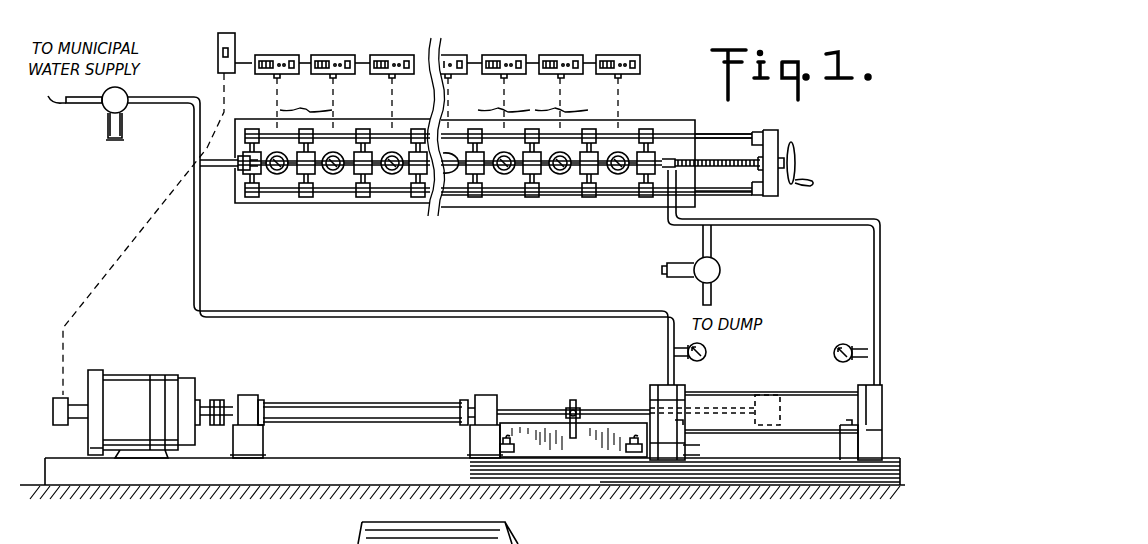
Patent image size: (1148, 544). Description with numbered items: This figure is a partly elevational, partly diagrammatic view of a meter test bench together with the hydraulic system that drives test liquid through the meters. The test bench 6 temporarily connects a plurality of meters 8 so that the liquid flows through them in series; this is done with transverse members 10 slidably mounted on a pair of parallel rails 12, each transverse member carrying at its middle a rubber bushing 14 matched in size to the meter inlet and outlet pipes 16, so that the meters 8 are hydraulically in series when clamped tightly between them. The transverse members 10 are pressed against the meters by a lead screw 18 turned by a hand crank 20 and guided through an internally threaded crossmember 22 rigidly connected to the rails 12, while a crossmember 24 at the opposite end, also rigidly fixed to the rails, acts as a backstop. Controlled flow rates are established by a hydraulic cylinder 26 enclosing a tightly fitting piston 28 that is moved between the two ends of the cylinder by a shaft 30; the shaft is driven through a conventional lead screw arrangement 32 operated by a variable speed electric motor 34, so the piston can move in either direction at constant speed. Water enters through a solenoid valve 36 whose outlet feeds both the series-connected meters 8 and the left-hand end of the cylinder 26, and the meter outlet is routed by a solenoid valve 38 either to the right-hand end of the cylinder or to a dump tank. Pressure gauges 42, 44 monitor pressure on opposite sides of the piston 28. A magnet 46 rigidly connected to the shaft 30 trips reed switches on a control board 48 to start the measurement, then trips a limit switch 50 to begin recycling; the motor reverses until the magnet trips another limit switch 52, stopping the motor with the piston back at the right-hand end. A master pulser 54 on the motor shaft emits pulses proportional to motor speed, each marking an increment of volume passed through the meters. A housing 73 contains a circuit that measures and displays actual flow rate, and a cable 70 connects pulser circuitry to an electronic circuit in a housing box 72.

The test bench 6 is at (680, 120).
The meters 8 is at (612, 178).
The transverse members 10 is at (483, 134).
The rails 12 is at (720, 176).
The rubber bushing 14 is at (648, 197).
The meter inlet and outlet pipes 16 is at (592, 178).
The lead screw 18 is at (710, 157).
The hand crank 20 is at (800, 150).
The internally threaded crossmember 22 is at (771, 142).
The crossmember 24 is at (238, 158).
The hydraulic cylinder 26 is at (818, 400).
The piston 28 is at (772, 392).
The shaft 30 is at (626, 405).
The lead screw arrangement 32 is at (418, 380).
The variable speed electric motor 34 is at (118, 382).
The solenoid valve 36 is at (100, 112).
The solenoid valve 38 is at (723, 262).
The pressure gauge 42 is at (706, 350).
The pressure gauge 44 is at (848, 344).
The magnet 46 is at (580, 400).
The control board 48 is at (528, 424).
The limit switch 50 is at (508, 454).
The limit switch 52 is at (634, 454).
The master pulser 54 is at (52, 398).
The cable 70 is at (442, 100).
The housing box 72 is at (322, 55).
The housing 73 is at (228, 28).